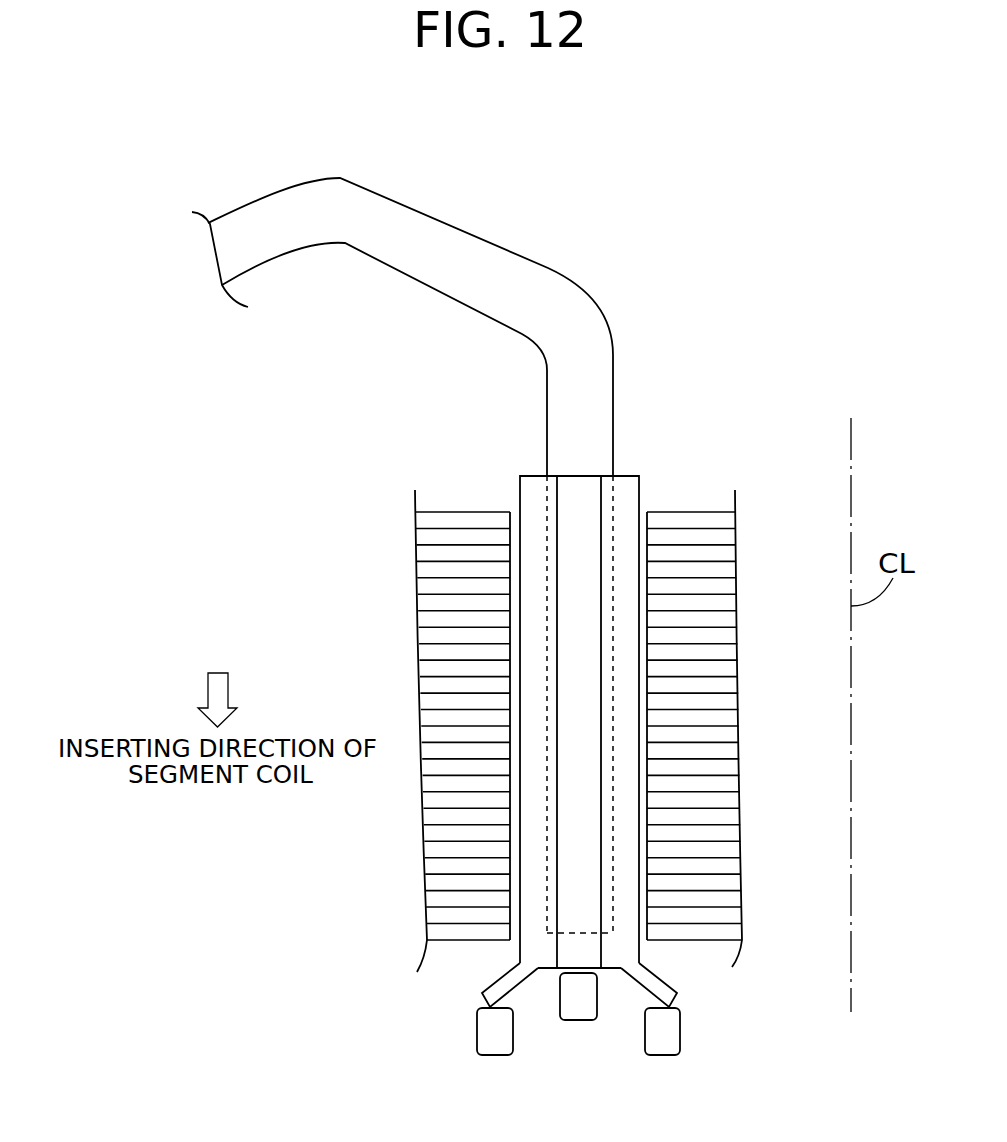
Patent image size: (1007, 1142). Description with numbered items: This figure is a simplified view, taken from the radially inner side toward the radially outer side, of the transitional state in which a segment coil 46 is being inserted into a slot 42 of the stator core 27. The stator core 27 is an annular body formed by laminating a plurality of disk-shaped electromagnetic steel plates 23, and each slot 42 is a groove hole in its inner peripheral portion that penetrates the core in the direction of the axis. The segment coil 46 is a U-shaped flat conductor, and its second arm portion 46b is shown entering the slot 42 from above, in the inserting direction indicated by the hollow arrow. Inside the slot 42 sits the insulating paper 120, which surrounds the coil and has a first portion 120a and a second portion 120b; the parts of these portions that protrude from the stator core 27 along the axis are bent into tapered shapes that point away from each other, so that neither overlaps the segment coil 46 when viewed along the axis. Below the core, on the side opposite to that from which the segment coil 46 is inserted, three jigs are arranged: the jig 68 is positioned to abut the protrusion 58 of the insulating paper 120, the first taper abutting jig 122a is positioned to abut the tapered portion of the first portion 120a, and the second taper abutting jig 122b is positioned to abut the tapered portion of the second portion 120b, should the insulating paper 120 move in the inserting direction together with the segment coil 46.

The segment coil 46 is at (492, 190).
The second arm portion 46b is at (613, 699).
The stator core 27 is at (399, 583).
The electromagnetic steel plates 23 is at (418, 617).
The slot 42 is at (500, 672).
The insulating paper 120 is at (648, 487).
The protrusion 58 is at (573, 500).
The first portion 120a is at (508, 985).
The second portion 120b is at (653, 980).
The first taper abutting jig 122a is at (493, 1043).
The jig 68 is at (577, 1003).
The second taper abutting jig 122b is at (665, 1038).